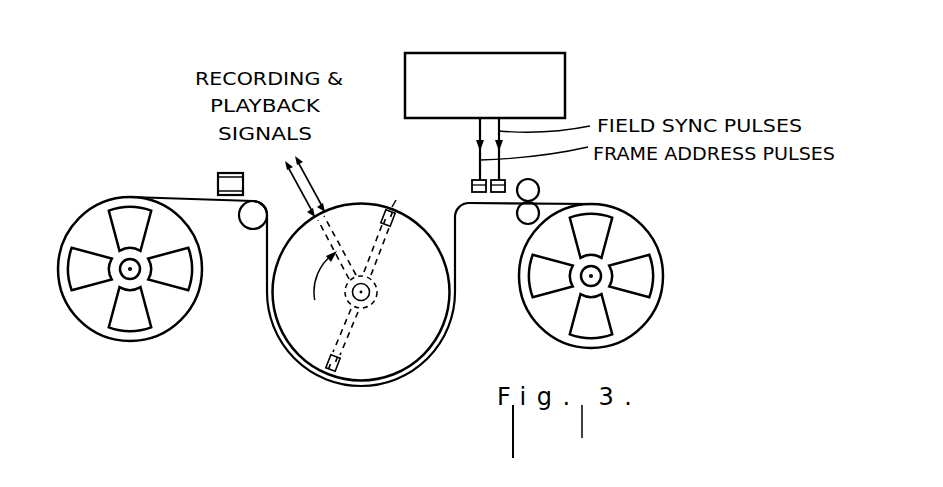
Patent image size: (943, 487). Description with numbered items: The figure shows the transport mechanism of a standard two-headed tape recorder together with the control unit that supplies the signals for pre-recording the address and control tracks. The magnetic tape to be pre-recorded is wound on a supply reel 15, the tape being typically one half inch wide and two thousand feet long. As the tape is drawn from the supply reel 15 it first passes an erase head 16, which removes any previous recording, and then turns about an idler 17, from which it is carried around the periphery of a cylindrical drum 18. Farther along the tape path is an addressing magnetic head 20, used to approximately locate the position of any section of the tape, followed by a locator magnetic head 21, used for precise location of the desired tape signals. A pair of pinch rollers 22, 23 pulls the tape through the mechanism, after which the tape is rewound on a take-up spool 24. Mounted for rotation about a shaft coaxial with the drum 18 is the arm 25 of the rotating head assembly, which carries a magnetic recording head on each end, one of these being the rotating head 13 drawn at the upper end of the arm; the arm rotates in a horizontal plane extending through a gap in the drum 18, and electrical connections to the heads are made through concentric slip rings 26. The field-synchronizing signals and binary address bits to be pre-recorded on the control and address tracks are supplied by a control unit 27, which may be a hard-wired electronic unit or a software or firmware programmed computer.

The first rotary video head 13 is at (398, 212).
The supply reel 15 is at (172, 332).
The erase head 16 is at (218, 178).
The idler 17 is at (251, 229).
The cylindrical drum 18 is at (362, 203).
The addressing magnetic head 20 is at (472, 186).
The locator magnetic head 21 is at (505, 180).
The pinch roller 22 is at (540, 191).
The pinch roller 23 is at (524, 223).
The take-up spool 24 is at (648, 305).
The arm of the rotating head assembly 25 is at (343, 337).
The concentric slip rings 26 is at (376, 288).
The control unit 27 is at (565, 75).